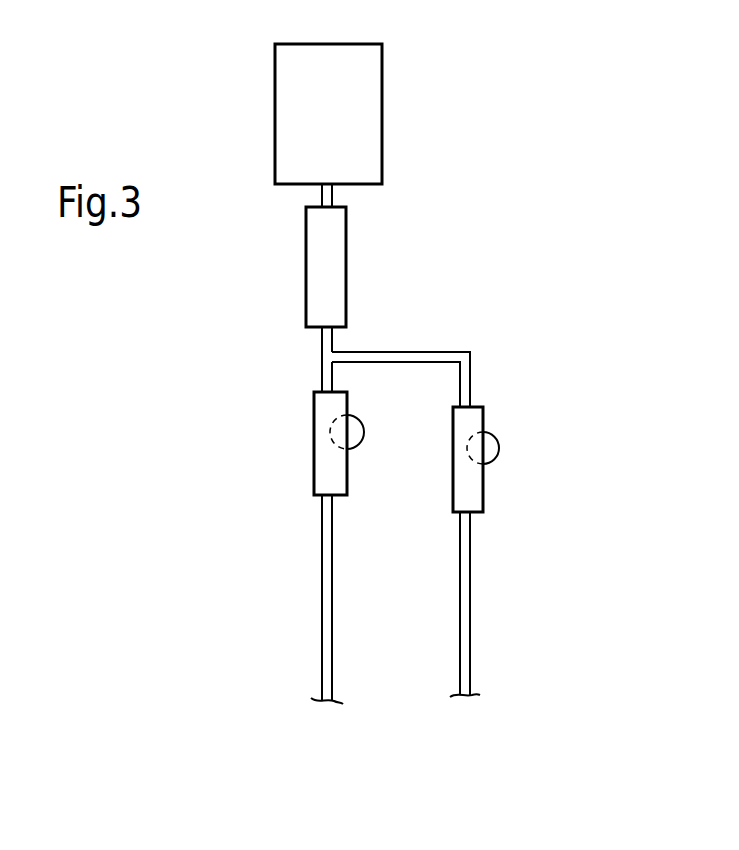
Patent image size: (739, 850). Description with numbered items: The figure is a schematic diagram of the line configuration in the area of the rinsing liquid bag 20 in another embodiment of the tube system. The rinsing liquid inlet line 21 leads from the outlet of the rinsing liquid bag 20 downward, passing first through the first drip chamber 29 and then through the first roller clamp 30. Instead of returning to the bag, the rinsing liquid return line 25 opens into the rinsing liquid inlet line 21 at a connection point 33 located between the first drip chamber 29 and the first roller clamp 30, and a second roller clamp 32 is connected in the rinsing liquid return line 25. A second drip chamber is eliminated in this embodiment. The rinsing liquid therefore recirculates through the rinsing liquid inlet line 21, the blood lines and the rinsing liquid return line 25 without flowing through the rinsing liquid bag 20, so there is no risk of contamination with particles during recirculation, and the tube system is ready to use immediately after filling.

The rinsing liquid bag 20 is at (362, 140).
The first drip chamber 29 is at (325, 252).
The connection point 33 is at (327, 357).
The first roller clamp 30 is at (332, 480).
The second roller clamp 32 is at (470, 497).
The rinsing liquid inlet line 21 is at (320, 607).
The rinsing liquid return line 25 is at (472, 611).